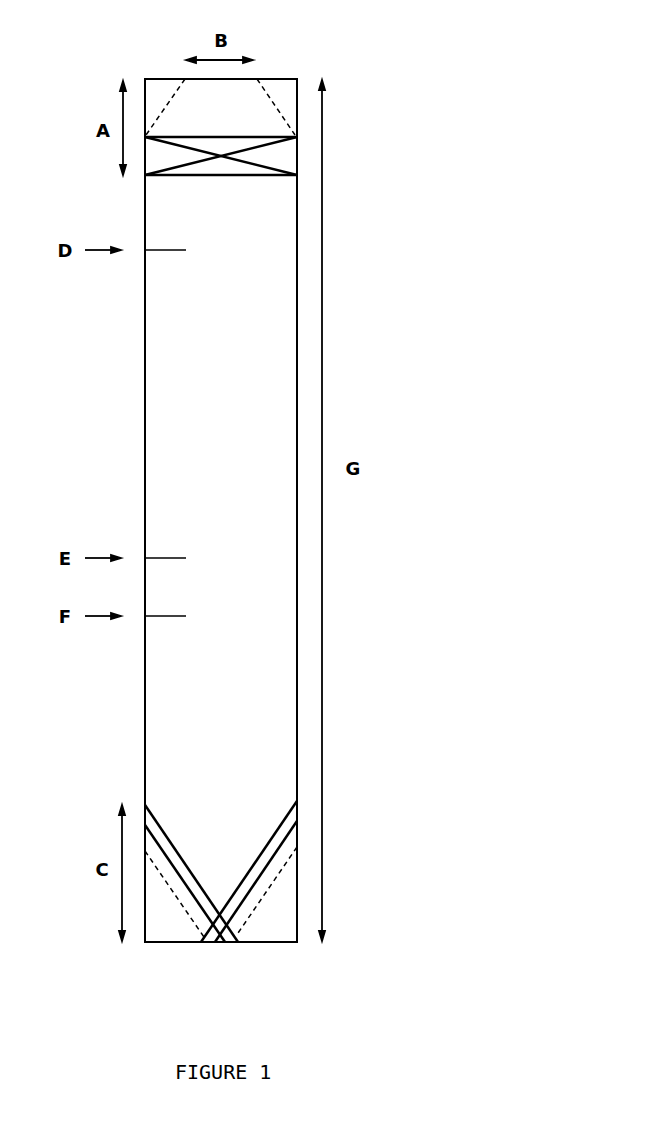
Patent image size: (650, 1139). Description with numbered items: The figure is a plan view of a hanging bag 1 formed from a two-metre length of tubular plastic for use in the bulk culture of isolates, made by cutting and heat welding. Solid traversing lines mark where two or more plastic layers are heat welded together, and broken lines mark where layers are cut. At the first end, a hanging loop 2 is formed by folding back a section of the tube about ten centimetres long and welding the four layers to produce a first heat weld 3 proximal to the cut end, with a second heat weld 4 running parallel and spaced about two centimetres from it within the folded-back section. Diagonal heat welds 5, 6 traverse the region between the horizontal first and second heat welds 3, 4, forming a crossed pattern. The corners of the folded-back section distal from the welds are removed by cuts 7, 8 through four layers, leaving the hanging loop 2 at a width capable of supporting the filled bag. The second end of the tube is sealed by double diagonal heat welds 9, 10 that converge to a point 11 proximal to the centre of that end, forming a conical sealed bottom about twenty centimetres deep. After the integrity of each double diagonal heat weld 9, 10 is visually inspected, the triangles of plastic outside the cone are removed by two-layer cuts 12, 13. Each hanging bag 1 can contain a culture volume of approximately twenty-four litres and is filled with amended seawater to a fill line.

The hanging bag 1 is at (142, 418).
The hanging loop 2 is at (243, 103).
The first heat weld 3 is at (257, 173).
The second heat weld 4 is at (183, 134).
The diagonal heat weld 5 is at (287, 140).
The diagonal heat weld 6 is at (177, 172).
The corner cut 7 is at (277, 103).
The corner cut 8 is at (158, 95).
The double diagonal heat weld 9 is at (272, 822).
The double diagonal heat weld 10 is at (160, 823).
The point 11 is at (218, 940).
The cut 12 is at (273, 873).
The cut 13 is at (168, 885).